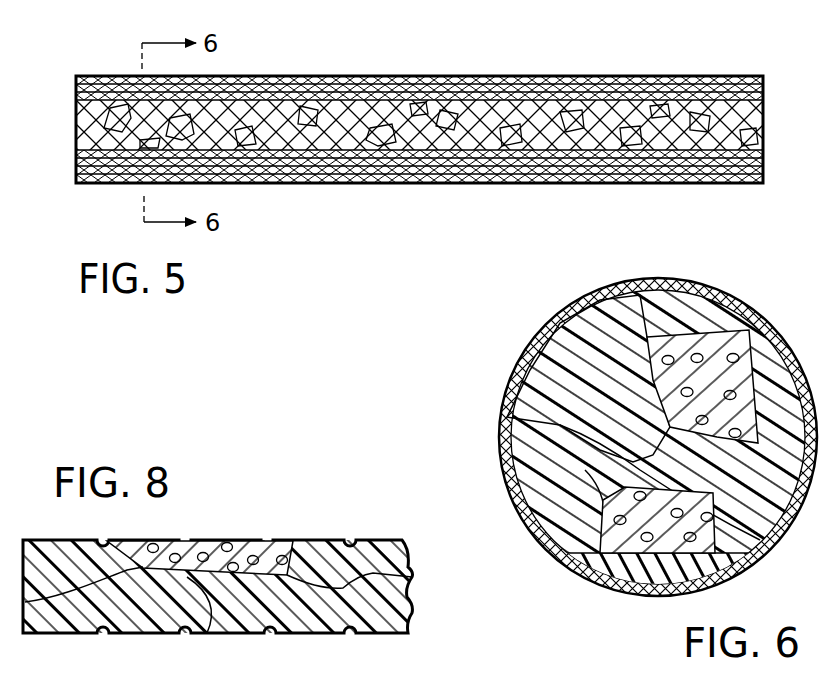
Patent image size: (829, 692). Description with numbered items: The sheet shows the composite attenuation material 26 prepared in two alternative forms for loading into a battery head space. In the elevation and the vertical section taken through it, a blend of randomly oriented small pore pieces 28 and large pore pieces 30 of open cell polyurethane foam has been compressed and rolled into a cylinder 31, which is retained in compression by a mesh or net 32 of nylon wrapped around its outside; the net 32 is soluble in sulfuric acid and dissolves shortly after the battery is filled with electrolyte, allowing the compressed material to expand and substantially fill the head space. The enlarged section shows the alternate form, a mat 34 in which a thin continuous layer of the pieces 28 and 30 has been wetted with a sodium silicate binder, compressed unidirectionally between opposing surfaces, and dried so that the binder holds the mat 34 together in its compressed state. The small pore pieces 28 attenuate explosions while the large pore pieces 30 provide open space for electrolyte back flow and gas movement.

In FIG. 5, the composite attenuation material 26 is at (327, 77).
In FIG. 5, the small pore pieces 28 is at (288, 78).
In FIG. 6, the small pore pieces 28 is at (550, 320).
In FIG. 8, the small pore pieces 28 is at (220, 612).
In FIG. 5, the large pore pieces 30 is at (660, 75).
In FIG. 6, the large pore pieces 30 is at (757, 330).
In FIG. 8, the large pore pieces 30 is at (240, 547).
In FIG. 5, the cylinder 31 is at (487, 74).
In FIG. 6, the cylinder 31 is at (566, 573).
In FIG. 5, the mesh or net 32 is at (615, 77).
In FIG. 6, the mesh or net 32 is at (690, 283).
In FIG. 8, the mat 34 is at (323, 537).